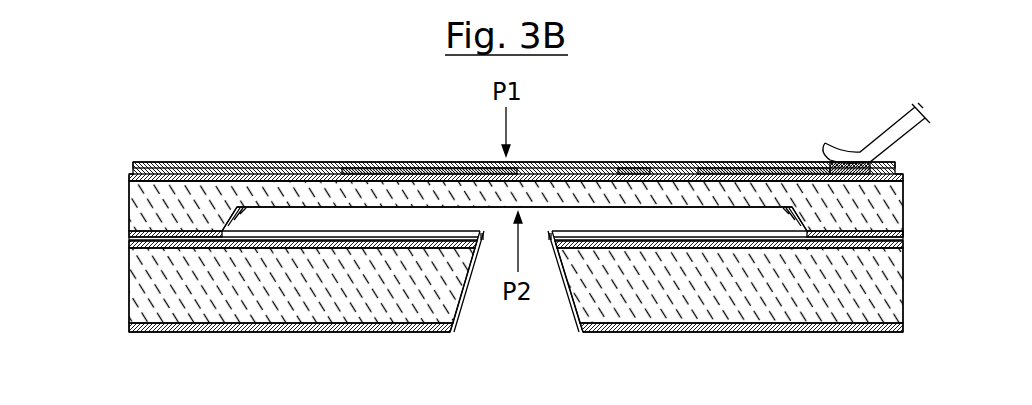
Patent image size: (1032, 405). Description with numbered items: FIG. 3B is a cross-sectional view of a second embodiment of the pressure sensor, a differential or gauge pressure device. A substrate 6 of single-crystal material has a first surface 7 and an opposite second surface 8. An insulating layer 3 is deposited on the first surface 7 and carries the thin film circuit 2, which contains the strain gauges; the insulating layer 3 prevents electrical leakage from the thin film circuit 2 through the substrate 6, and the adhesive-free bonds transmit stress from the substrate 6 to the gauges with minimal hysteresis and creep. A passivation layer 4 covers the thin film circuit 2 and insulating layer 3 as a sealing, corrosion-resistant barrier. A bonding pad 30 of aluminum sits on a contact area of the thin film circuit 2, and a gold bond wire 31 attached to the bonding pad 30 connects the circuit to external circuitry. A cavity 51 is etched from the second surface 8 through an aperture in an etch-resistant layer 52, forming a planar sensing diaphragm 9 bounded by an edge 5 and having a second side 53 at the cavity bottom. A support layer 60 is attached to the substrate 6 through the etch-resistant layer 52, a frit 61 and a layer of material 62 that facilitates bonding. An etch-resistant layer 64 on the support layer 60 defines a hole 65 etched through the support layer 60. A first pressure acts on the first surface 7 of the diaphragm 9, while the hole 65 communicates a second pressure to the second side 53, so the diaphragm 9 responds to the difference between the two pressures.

The thin film circuit 2 is at (366, 163).
The insulating layer 3 is at (130, 175).
The passivation layer 4 is at (133, 163).
The edge 5 is at (238, 208).
The substrate 6 is at (129, 204).
The first surface 7 is at (273, 178).
The second surface 8 is at (885, 226).
The sensing diaphragm 9 is at (590, 190).
The bonding pad 30 is at (830, 160).
The bond wire 31 is at (882, 143).
The cavity 51 is at (463, 228).
The etch-resistant layer 52 is at (128, 233).
The second side 53 is at (340, 208).
The support layer 60 is at (129, 293).
The frit 61 is at (129, 239).
The layer of material 62 is at (129, 243).
The etch-resistant layer 64 is at (212, 327).
The hole 65 is at (573, 296).